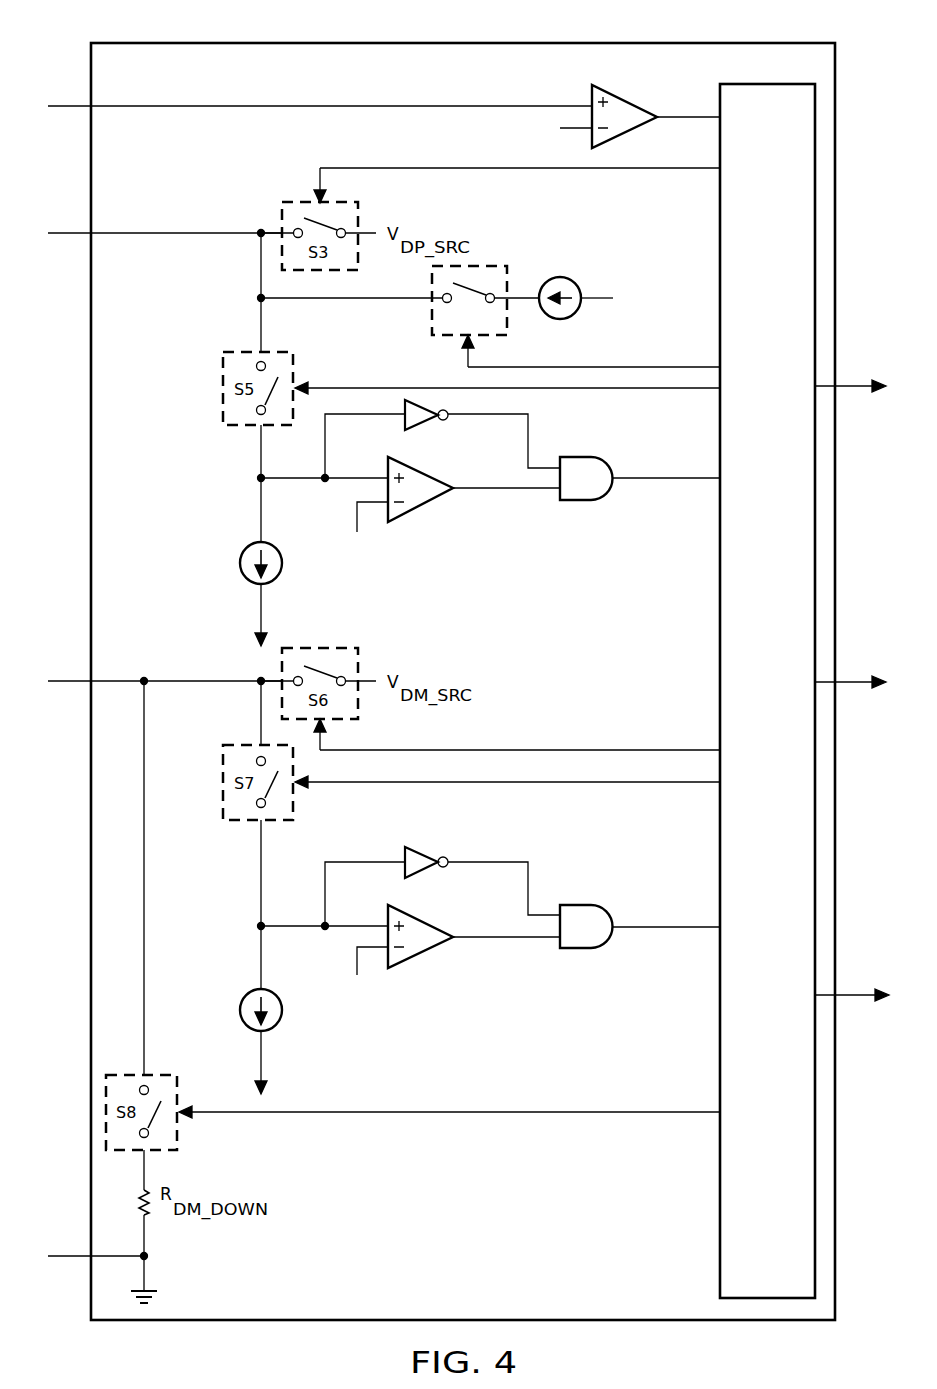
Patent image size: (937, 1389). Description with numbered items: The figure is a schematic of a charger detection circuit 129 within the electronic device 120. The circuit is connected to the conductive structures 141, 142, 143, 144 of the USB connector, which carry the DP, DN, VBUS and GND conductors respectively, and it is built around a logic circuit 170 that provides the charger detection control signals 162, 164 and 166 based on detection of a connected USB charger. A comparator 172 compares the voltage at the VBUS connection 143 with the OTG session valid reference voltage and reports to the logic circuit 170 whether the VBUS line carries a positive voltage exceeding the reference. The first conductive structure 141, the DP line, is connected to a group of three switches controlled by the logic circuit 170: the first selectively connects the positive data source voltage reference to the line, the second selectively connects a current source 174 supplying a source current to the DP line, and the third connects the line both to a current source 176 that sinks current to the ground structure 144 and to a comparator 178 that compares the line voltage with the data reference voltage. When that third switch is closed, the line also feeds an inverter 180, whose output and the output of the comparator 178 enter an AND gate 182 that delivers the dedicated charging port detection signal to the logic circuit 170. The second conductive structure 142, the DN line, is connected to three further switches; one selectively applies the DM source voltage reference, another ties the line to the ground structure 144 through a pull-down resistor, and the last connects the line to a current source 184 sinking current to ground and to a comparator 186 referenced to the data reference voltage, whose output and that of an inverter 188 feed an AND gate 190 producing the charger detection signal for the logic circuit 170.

The electronic device 120 is at (72, 54).
The charger detection circuit 129 is at (325, 78).
The first conductive structure 141 is at (70, 236).
The second conductive structure 142 is at (70, 684).
The conductive structure 143 is at (70, 108).
The conductive structure 144 is at (70, 1259).
The charger detection control signal 162 is at (850, 383).
The charger detection control signal 164 is at (850, 686).
The charger detection control signal 166 is at (853, 999).
The logic circuit 170 is at (787, 711).
The comparator 172 is at (620, 97).
The current source 174 is at (561, 277).
The current source 176 is at (240, 563).
The comparator 178 is at (422, 510).
The inverter 180 is at (428, 428).
The AND gate 182 is at (580, 456).
The current source 184 is at (240, 1010).
The comparator 186 is at (421, 956).
The inverter 188 is at (424, 847).
The AND gate 190 is at (580, 949).